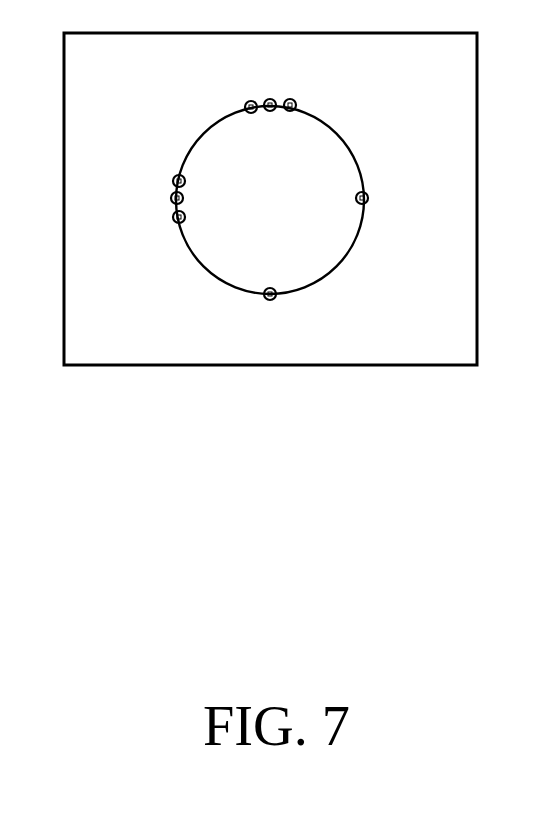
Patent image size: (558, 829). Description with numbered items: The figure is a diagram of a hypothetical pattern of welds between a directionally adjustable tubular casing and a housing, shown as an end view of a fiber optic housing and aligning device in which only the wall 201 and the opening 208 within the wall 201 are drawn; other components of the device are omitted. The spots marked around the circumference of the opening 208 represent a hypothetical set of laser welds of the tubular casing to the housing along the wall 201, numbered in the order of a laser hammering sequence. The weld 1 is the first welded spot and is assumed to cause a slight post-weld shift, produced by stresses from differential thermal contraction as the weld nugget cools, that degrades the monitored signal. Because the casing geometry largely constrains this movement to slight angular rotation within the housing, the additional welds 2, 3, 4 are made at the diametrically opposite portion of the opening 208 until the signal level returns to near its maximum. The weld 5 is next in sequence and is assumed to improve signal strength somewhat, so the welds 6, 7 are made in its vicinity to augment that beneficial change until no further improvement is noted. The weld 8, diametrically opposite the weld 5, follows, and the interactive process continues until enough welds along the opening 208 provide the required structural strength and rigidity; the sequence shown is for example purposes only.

The wall 201 is at (465, 87).
The opening 208 is at (285, 180).
The weld 1 is at (367, 196).
The weld 2 is at (172, 195).
The weld 3 is at (176, 222).
The weld 4 is at (179, 175).
The weld 5 is at (268, 99).
The weld 6 is at (247, 103).
The weld 7 is at (290, 99).
The weld 8 is at (268, 300).